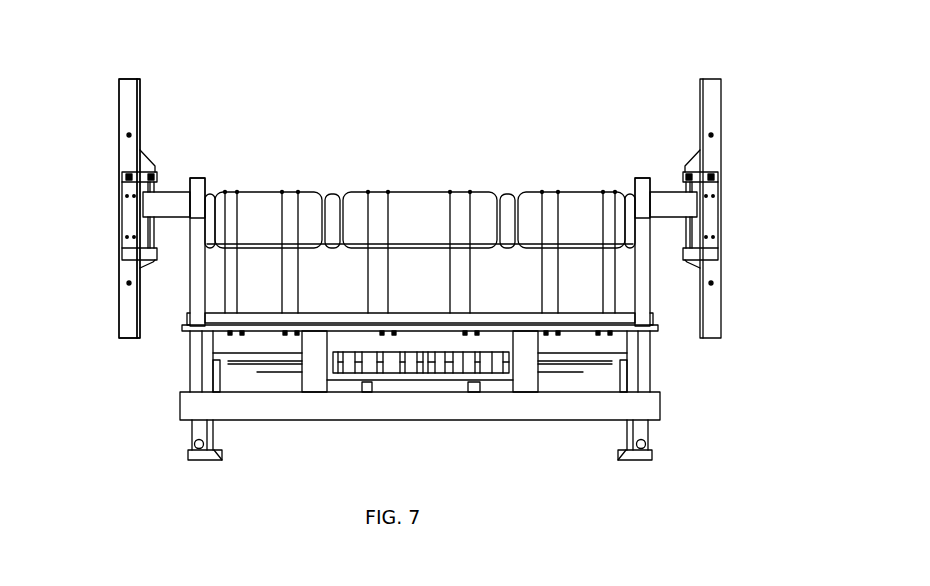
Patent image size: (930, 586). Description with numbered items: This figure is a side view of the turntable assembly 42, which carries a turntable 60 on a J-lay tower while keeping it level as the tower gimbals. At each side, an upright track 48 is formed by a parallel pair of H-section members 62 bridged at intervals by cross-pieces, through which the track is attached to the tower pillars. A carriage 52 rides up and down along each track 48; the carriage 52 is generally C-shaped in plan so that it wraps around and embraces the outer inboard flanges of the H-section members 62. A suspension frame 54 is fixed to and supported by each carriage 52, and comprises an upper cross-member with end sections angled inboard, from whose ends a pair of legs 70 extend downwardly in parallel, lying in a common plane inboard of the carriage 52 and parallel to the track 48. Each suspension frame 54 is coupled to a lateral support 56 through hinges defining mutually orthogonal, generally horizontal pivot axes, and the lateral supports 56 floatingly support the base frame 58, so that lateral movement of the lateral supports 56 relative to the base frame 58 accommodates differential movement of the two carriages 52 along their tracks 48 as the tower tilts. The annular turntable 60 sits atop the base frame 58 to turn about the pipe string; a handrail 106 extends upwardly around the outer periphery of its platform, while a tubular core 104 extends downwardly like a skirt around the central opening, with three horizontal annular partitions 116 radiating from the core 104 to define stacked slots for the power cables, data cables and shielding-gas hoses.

The turntable assembly 42 is at (421, 243).
The upright track 48 is at (723, 95).
The H-section member 62 is at (130, 102).
The carriage 52 is at (128, 215).
The suspension frame 54 is at (188, 294).
The leg 70 is at (200, 178).
The handrail 106 is at (453, 190).
The turntable 60 is at (229, 360).
The annular partition 116 is at (292, 373).
The tubular core 104 is at (423, 377).
The base frame 58 is at (522, 407).
The lateral support 56 is at (185, 453).